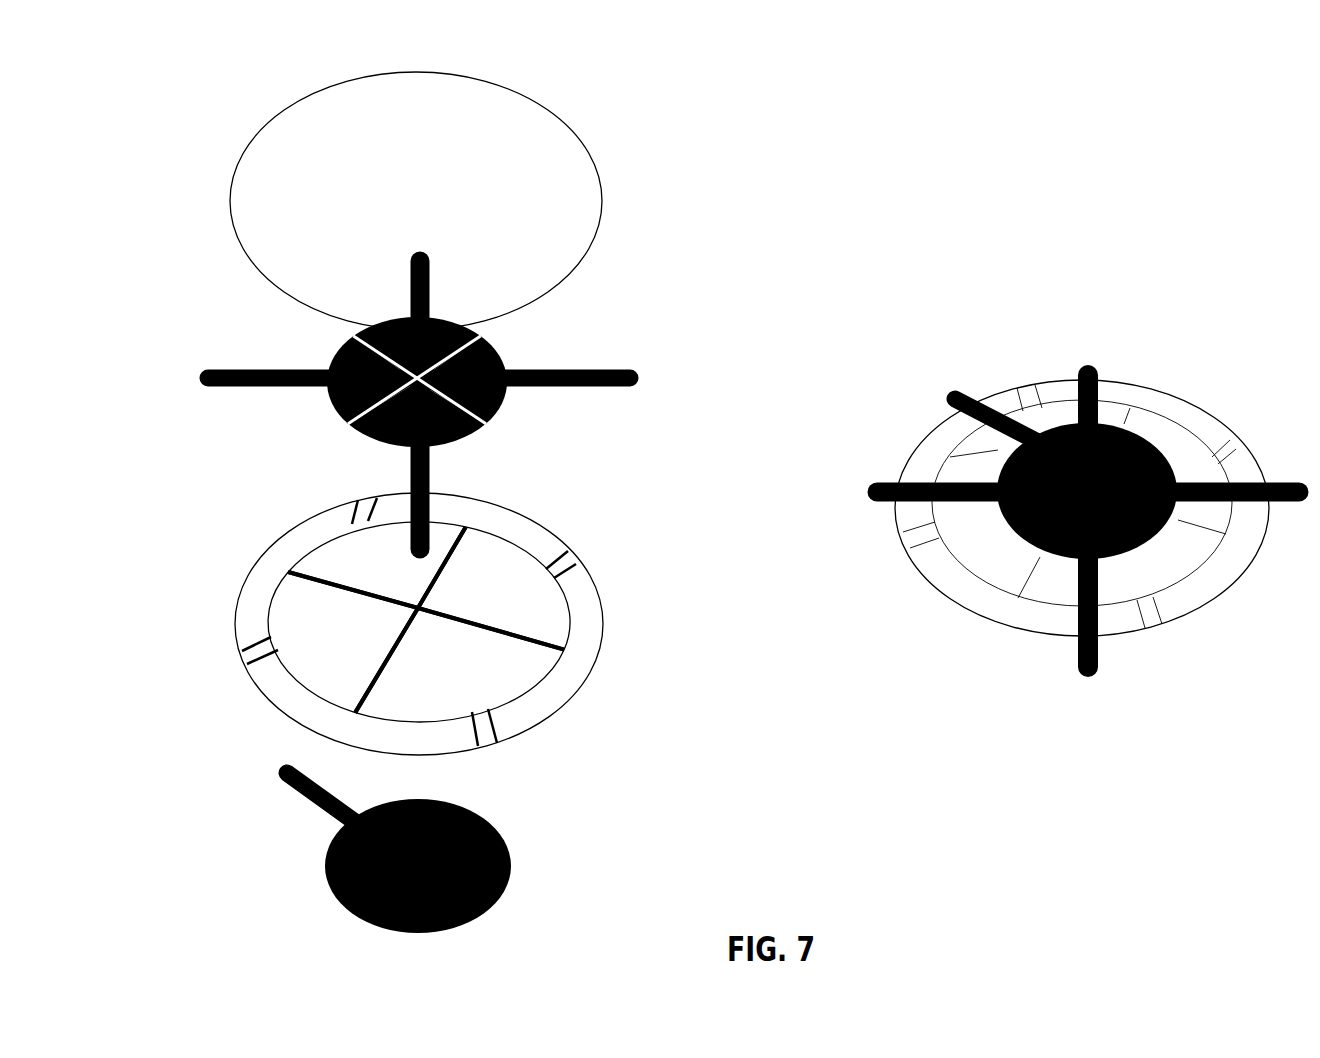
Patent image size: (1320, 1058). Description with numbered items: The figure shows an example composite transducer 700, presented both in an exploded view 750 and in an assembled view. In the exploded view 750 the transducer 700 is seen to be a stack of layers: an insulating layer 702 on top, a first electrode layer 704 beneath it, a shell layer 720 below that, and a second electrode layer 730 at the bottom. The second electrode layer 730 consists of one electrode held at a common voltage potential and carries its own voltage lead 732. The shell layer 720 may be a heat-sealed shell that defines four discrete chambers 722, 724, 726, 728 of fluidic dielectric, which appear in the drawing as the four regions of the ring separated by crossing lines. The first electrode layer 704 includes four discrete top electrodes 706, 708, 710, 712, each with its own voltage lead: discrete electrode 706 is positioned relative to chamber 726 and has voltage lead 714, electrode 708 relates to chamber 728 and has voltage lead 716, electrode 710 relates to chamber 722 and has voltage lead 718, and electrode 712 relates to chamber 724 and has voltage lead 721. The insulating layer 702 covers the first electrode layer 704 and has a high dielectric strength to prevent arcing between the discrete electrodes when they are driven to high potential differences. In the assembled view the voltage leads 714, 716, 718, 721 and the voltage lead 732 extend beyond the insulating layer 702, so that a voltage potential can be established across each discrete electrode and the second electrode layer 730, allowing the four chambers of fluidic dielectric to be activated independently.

The transducer 700 is at (720, 486).
The exploded view 750 is at (750, 338).
The insulating layer 702 is at (590, 180).
The first electrode layer 704 is at (706, 403).
The discrete electrode 706 is at (365, 330).
The discrete electrode 708 is at (327, 392).
The discrete electrode 710 is at (463, 442).
The discrete electrode 712 is at (497, 345).
The voltage lead 714 is at (410, 257).
The voltage lead 716 is at (197, 385).
The voltage lead 718 is at (410, 466).
The voltage lead 721 is at (610, 387).
The shell layer 720 is at (713, 570).
The discrete chamber 722 is at (495, 684).
The discrete chamber 724 is at (500, 560).
The discrete chamber 726 is at (358, 557).
The discrete chamber 728 is at (328, 657).
The second electrode layer 730 is at (507, 843).
The voltage lead 732 is at (284, 783).